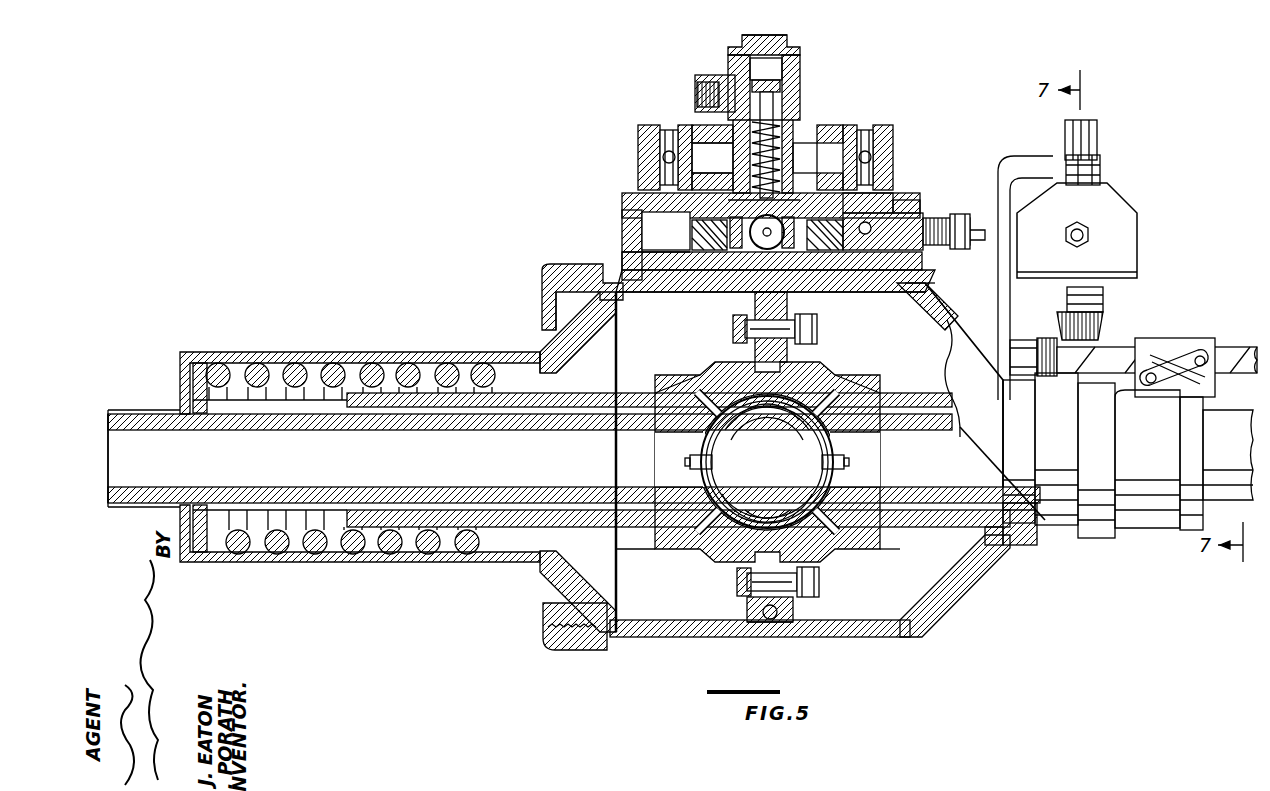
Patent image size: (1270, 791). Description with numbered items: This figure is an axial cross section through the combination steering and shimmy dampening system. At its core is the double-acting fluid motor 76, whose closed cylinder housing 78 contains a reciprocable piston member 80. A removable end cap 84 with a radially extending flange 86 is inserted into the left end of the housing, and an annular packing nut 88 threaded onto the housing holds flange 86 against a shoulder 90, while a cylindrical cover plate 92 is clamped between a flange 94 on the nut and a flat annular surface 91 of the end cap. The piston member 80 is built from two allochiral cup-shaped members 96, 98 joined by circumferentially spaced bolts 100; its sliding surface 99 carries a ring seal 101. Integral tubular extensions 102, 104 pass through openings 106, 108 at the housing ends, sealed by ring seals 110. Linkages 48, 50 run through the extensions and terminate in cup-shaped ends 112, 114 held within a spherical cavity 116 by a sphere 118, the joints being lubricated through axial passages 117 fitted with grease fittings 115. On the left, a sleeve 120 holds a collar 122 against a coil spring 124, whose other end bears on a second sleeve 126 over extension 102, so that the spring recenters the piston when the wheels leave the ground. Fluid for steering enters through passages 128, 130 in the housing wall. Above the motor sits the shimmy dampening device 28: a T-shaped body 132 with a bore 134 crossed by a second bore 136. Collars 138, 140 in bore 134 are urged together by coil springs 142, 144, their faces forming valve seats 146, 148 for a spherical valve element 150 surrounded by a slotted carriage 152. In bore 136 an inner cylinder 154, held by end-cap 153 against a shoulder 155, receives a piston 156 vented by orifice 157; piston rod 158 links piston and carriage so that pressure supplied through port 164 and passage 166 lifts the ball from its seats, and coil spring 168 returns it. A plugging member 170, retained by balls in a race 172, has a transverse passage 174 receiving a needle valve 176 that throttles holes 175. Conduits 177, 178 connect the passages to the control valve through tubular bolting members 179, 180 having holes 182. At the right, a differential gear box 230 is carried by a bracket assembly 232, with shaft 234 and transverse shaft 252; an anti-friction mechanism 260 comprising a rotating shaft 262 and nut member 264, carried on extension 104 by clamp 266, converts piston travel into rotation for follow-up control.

The shimmy dampening device 28 is at (805, 109).
The linkage 48 is at (625, 515).
The linkage 50 is at (905, 530).
The double-acting fluid motor 76 is at (920, 637).
The cylinder housing 78 is at (950, 590).
The piston member 80 is at (800, 313).
The end cap 84 is at (598, 320).
The flange 86 is at (565, 625).
The packing nut 88 is at (575, 648).
The shoulder 90 is at (558, 263).
The flat annular surface 91 is at (570, 318).
The cover plate 92 is at (497, 348).
The flange 94 is at (560, 302).
The cup-shaped member 96 is at (720, 380).
The cup-shaped member 98 is at (840, 380).
The surface 99 is at (750, 620).
The bolts 100 is at (810, 582).
The ring seal 101 is at (770, 635).
The tubular extension 102 is at (575, 392).
The tubular extension 104 is at (895, 392).
The opening 106 is at (575, 512).
The opening 108 is at (930, 520).
The ring seals 110 is at (525, 545).
The end 112 is at (735, 400).
The end 114 is at (810, 490).
The grease fittings 115 is at (705, 460).
The spherical cavity 116 is at (735, 560).
The passages 117 is at (445, 473).
The sphere 118 is at (805, 442).
The sleeve 120 is at (155, 408).
The collar 122 is at (225, 495).
The coil spring 124 is at (285, 545).
The second sleeve 126 is at (430, 352).
The passage 128 is at (665, 288).
The passage 130 is at (880, 292).
The T-shaped body 132 is at (625, 222).
The bore 134 is at (648, 241).
The second bore 136 is at (800, 145).
The collar 138 is at (640, 250).
The collar 140 is at (915, 255).
The coil spring 142 is at (700, 205).
The coil spring 144 is at (865, 195).
The valve seat 146 is at (717, 247).
The valve seat 148 is at (812, 247).
The spherical valve element 150 is at (767, 250).
The slotted carriage 152 is at (745, 172).
The end-cap 153 is at (788, 40).
The inner cylinder 154 is at (800, 70).
The shoulder 155 is at (800, 130).
The piston 156 is at (810, 85).
The orifice 157 is at (745, 40).
The piston rod 158 is at (745, 140).
The port 164 is at (700, 90).
The passage 166 is at (740, 95).
The coil spring 168 is at (786, 160).
The plugging member 170 is at (955, 224).
The race 172 is at (935, 212).
The passage 174 is at (905, 205).
The holes 175 is at (948, 250).
The needle valve 176 is at (970, 235).
The conduit 177 is at (705, 145).
The conduit 178 is at (860, 148).
The tubular bolting member 179 is at (640, 147).
The tubular bolting member 180 is at (895, 148).
The holes 182 is at (665, 160).
The differential gear box 230 is at (1115, 205).
The bracket assembly 232 is at (1010, 175).
The shaft 234 is at (1093, 142).
The shaft 252 is at (1077, 248).
The anti-friction mechanism 260 is at (1170, 343).
The rotating shaft 262 is at (1110, 340).
The nut member 264 is at (1215, 380).
The clamp 266 is at (1118, 538).